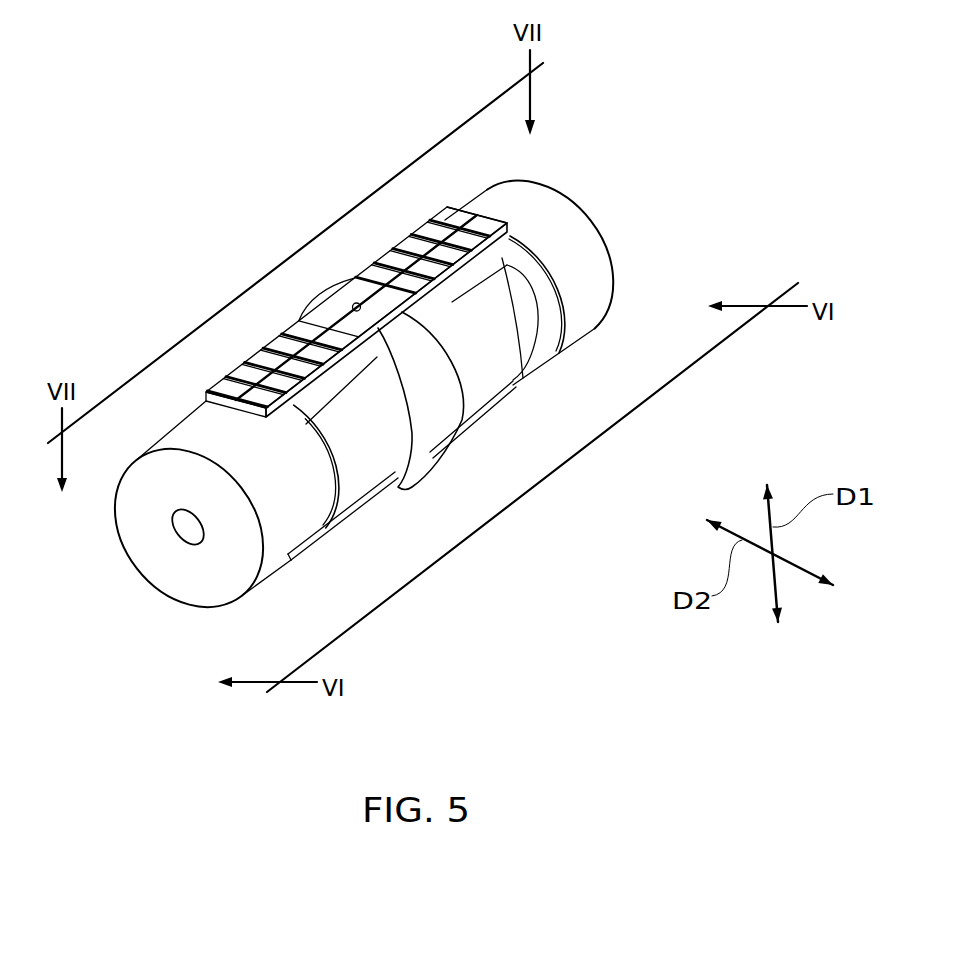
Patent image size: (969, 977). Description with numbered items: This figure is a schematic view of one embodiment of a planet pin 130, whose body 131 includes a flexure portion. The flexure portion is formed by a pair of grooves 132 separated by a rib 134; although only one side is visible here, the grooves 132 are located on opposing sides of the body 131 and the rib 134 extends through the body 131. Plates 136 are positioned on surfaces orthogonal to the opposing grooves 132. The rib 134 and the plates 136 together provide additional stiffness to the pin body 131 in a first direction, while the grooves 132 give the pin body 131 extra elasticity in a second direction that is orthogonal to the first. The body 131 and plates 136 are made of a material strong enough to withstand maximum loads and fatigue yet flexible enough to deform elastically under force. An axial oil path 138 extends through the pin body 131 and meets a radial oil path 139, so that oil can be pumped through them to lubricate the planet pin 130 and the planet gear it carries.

The planet pin 130 is at (770, 133).
The body 131 is at (579, 240).
The grooves 132 is at (370, 470).
The rib 134 is at (450, 392).
The plates 136 is at (413, 250).
The axial oil path 138 is at (182, 522).
The radial oil path 139 is at (355, 303).